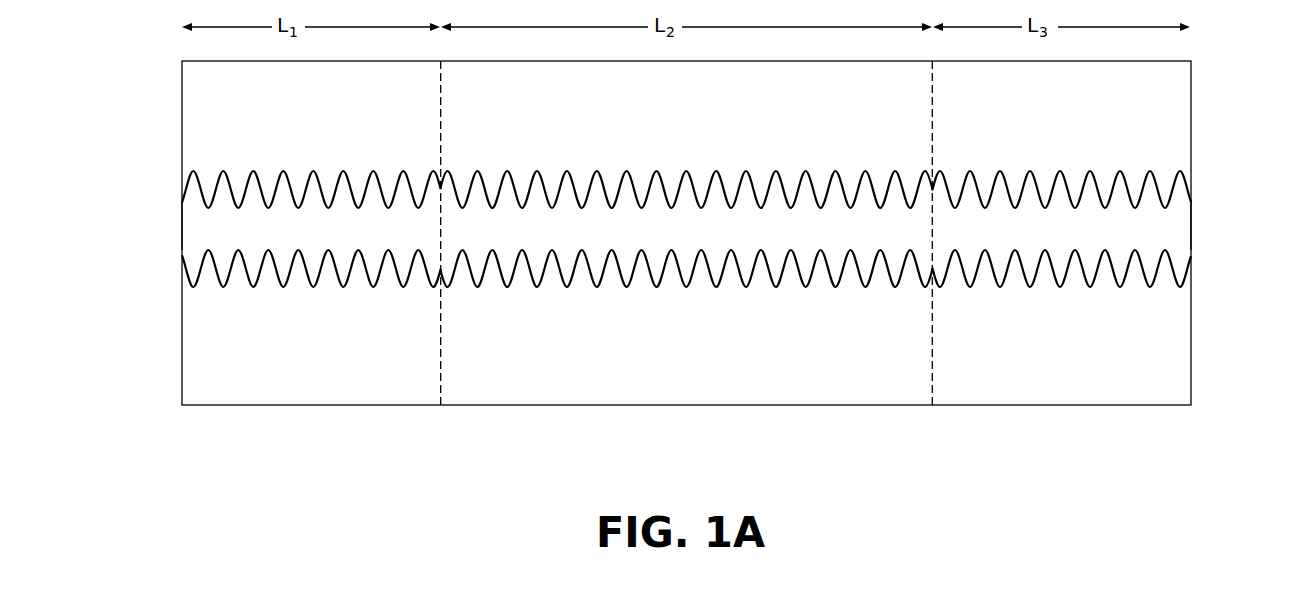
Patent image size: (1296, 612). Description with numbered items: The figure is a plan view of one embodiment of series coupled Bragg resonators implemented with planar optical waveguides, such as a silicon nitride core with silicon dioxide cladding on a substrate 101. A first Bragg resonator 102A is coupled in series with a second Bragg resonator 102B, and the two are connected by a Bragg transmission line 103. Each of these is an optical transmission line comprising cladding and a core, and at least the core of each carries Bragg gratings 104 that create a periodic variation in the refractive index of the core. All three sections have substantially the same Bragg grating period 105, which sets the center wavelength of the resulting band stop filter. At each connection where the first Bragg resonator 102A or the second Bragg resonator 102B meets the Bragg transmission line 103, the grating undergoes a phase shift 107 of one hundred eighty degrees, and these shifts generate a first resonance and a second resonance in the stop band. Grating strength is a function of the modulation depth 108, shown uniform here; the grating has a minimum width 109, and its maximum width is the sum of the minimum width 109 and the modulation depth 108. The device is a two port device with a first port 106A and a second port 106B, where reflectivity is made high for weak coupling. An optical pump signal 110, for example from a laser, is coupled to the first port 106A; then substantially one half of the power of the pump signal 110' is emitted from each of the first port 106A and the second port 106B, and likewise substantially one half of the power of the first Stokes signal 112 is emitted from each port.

The substrate 101 is at (532, 91).
The first Bragg resonator 102A is at (396, 155).
The second Bragg resonator 102B is at (981, 154).
The Bragg transmission line 103 is at (767, 310).
The Bragg gratings 104 is at (283, 171).
The Bragg grating period 105 is at (757, 157).
The first port 106A is at (182, 225).
The second port 106B is at (1192, 225).
The phase shift 107 is at (441, 262).
The modulation depth 108 is at (358, 201).
The minimum width 109 is at (328, 215).
The optical pump signal 110 is at (124, 103).
The pump signal 110' is at (686, 175).
The first Stokes signal 112 is at (162, 322).